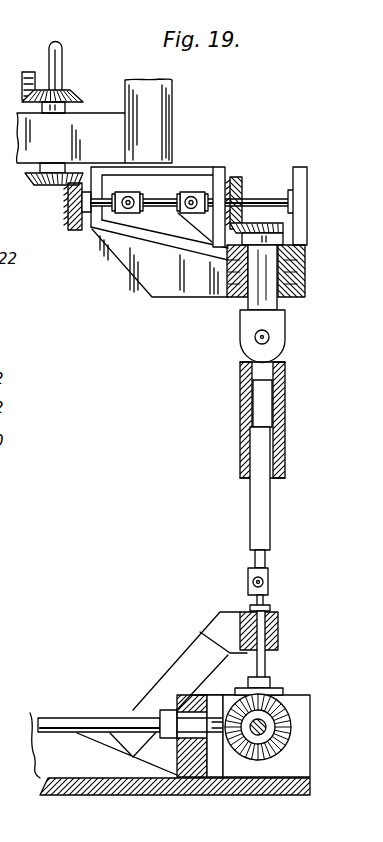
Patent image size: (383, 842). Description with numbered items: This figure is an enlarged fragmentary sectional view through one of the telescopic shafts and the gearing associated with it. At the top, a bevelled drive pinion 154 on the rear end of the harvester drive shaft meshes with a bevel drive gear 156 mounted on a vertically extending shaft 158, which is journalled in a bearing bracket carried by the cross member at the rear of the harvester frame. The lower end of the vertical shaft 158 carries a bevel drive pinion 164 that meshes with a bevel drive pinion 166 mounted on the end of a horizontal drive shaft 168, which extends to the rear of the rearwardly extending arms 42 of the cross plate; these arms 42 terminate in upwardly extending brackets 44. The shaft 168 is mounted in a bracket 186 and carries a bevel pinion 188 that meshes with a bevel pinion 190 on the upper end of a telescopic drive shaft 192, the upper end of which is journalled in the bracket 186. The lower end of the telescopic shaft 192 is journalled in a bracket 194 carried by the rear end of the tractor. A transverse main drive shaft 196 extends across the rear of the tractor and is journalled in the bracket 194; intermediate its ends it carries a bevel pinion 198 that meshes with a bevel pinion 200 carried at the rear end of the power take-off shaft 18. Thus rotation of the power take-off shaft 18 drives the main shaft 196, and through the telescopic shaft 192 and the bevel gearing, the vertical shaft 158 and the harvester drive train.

The power take-off shaft 18 is at (92, 722).
The rearwardly extending arms 42 is at (88, 123).
The upwardly extending brackets 44 is at (174, 85).
The bevelled drive pinion 154 is at (32, 71).
The bevel drive gear 156 is at (68, 89).
The vertically extending shaft 158 is at (62, 57).
The bevel drive pinion 164 is at (33, 187).
The bevel drive pinion 166 is at (78, 226).
The drive shaft 168 is at (170, 200).
The bracket 186 is at (173, 286).
The bevel pinion 188 is at (238, 182).
The bevel pinion 190 is at (285, 227).
The telescopic drive shaft 192 is at (278, 456).
The bracket 194 is at (278, 628).
The transverse shaft 196 is at (256, 752).
The bevel pinion 198 is at (267, 712).
The bevel pinion 200 is at (230, 752).